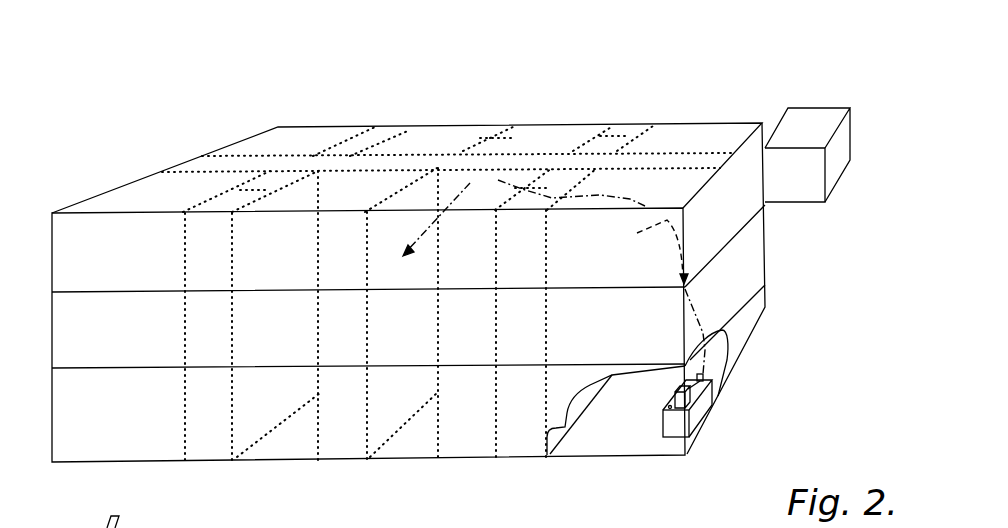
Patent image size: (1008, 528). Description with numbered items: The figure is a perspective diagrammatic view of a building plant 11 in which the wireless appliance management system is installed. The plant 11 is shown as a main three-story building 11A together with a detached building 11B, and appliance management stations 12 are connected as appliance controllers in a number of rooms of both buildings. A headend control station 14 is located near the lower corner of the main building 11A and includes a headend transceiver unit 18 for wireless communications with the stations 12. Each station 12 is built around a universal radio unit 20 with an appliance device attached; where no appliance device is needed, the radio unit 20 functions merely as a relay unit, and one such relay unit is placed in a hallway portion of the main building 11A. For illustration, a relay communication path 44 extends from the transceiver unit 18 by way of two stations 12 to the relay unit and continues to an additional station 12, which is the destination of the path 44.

The building plant 11 is at (451, 302).
The main three-story building 11A is at (767, 312).
The detached building 11B is at (825, 203).
The appliance management station 12 is at (472, 290).
The headend control station 14 is at (712, 395).
The headend transceiver unit 18 is at (703, 378).
The universal radio unit 20 is at (524, 205).
The relay communication path 44 is at (649, 252).